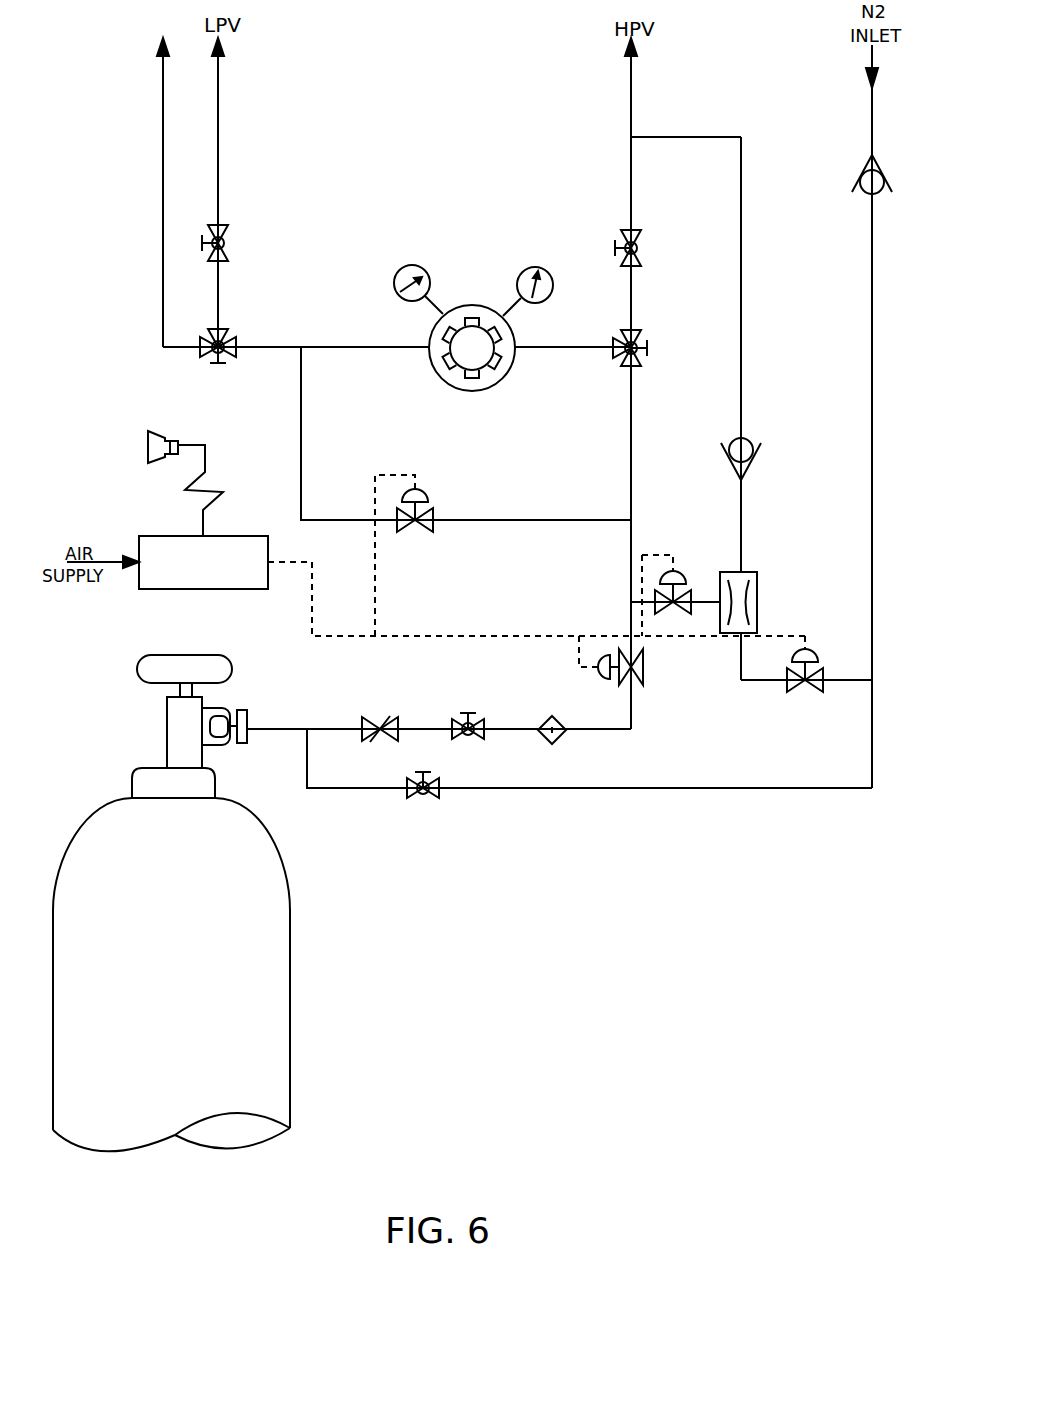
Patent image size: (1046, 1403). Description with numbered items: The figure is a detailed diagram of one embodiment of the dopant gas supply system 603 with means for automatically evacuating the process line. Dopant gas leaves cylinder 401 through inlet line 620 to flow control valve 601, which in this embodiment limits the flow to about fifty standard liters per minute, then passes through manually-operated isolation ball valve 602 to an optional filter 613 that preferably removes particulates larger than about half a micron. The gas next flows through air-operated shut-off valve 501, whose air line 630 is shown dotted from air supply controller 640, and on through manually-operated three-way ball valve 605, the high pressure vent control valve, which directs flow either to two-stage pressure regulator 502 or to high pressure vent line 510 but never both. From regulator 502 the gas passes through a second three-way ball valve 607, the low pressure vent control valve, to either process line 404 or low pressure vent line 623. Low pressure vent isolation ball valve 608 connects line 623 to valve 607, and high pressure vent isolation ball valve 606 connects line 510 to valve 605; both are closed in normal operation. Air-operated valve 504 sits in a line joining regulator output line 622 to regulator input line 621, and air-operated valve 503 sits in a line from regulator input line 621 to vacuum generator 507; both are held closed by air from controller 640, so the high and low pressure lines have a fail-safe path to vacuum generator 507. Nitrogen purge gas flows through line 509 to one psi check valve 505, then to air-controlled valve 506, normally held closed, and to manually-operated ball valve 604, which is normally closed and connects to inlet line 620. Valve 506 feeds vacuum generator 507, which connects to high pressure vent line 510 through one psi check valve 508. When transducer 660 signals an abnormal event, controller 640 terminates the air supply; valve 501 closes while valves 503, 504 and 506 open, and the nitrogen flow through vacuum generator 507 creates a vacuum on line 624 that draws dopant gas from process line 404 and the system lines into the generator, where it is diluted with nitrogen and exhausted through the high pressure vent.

The cylinder 401 is at (290, 930).
The process line 404 is at (163, 165).
The air-operated shut-off valve 501 is at (641, 672).
The two-stage pressure regulator 502 is at (505, 378).
The air-operated valve 503 is at (680, 575).
The air-operated valve 504 is at (405, 530).
The check valve 505 is at (865, 175).
The air-controlled valve 506 is at (812, 660).
The vacuum generator 507 is at (757, 605).
The check valve 508 is at (755, 455).
The line 509 is at (870, 108).
The high pressure vent line 510 is at (633, 103).
The flow control valve 601 is at (385, 715).
The manually-operated isolation ball valve 602 is at (478, 722).
The gas supply system 603 is at (489, 180).
The manually-operated ball valve 604 is at (430, 780).
The manually-operated three-way ball valve 605 is at (642, 345).
The manually-operated high pressure vent isolation ball valve 606 is at (640, 243).
The manually-operated three-way ball valve 607 is at (230, 345).
The manually-operated low pressure vent isolation ball valve 608 is at (228, 243).
The filter 613 is at (560, 720).
The inlet line 620 is at (290, 729).
The regulator input line 621 is at (633, 440).
The regulator output line 622 is at (345, 347).
The low pressure vent line 623 is at (218, 165).
The line 624 is at (703, 604).
The air line 630 is at (525, 636).
The air supply controller 640 is at (233, 536).
The transducer 660 is at (176, 436).